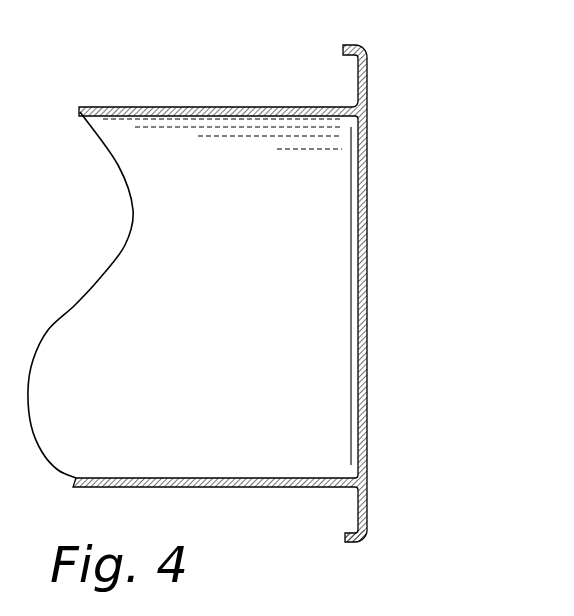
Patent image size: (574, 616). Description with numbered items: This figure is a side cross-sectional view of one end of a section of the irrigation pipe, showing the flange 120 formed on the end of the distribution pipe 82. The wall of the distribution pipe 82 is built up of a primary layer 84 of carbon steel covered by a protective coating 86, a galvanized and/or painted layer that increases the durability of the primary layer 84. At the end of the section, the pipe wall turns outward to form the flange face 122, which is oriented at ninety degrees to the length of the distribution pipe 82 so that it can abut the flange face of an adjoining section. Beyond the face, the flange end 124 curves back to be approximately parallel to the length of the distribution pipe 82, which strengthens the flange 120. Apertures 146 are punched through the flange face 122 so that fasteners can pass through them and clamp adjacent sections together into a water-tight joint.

The distribution pipe 82 is at (234, 76).
The primary layer 84 is at (196, 118).
The protective coating 86 is at (169, 106).
The apertures 146 is at (368, 73).
The flange face 122 is at (366, 493).
The flange end 124 is at (348, 540).
The flange 120 is at (370, 562).